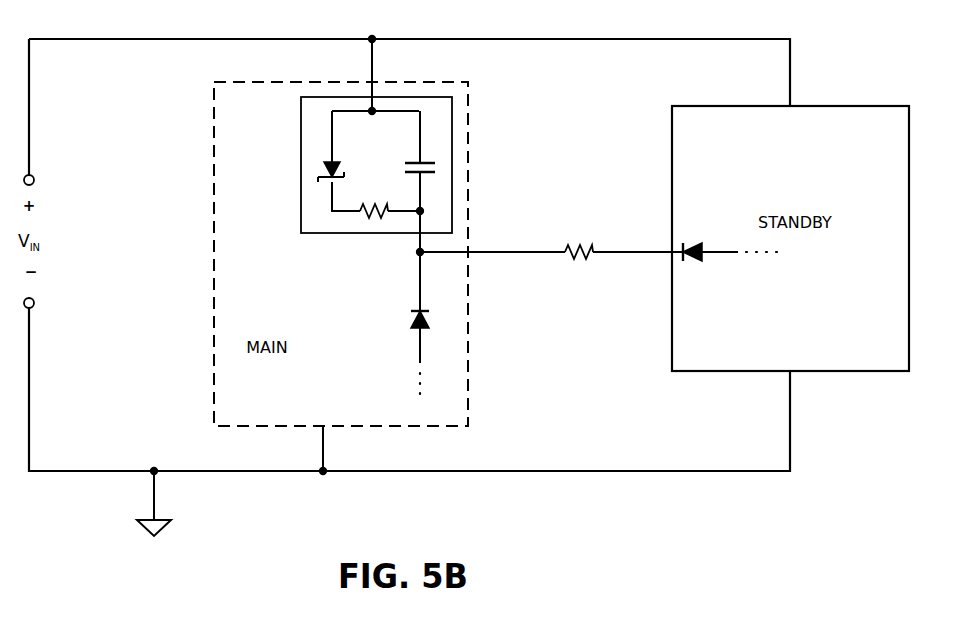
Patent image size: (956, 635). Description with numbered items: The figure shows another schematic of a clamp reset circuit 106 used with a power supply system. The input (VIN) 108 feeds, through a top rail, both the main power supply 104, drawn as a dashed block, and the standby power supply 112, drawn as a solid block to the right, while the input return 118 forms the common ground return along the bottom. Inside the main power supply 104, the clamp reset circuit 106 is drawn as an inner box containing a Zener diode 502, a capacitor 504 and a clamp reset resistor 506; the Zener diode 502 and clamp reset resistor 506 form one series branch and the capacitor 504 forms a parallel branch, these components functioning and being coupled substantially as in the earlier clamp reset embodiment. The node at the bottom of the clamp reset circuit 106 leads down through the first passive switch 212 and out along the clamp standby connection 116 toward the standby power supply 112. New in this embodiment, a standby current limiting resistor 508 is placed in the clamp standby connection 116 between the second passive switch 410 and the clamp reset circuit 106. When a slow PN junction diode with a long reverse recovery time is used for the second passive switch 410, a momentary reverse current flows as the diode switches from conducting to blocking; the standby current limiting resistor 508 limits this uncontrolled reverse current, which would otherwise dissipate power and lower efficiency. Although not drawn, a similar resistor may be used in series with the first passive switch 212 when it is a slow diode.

The main power supply 104 is at (208, 253).
The clamp reset circuit 106 is at (299, 121).
The input (VIN) 108 is at (58, 237).
The standby power supply 112 is at (872, 95).
The clamp standby connection 116 is at (508, 244).
The input return 118 is at (137, 517).
The passive switch D1 212 is at (388, 336).
The passive switch D8 410 is at (706, 292).
The Zener diode 502 is at (320, 167).
The capacitor 504 is at (440, 168).
The clamp reset resistor 506 is at (368, 222).
The standby current limiting resistor 508 is at (580, 238).